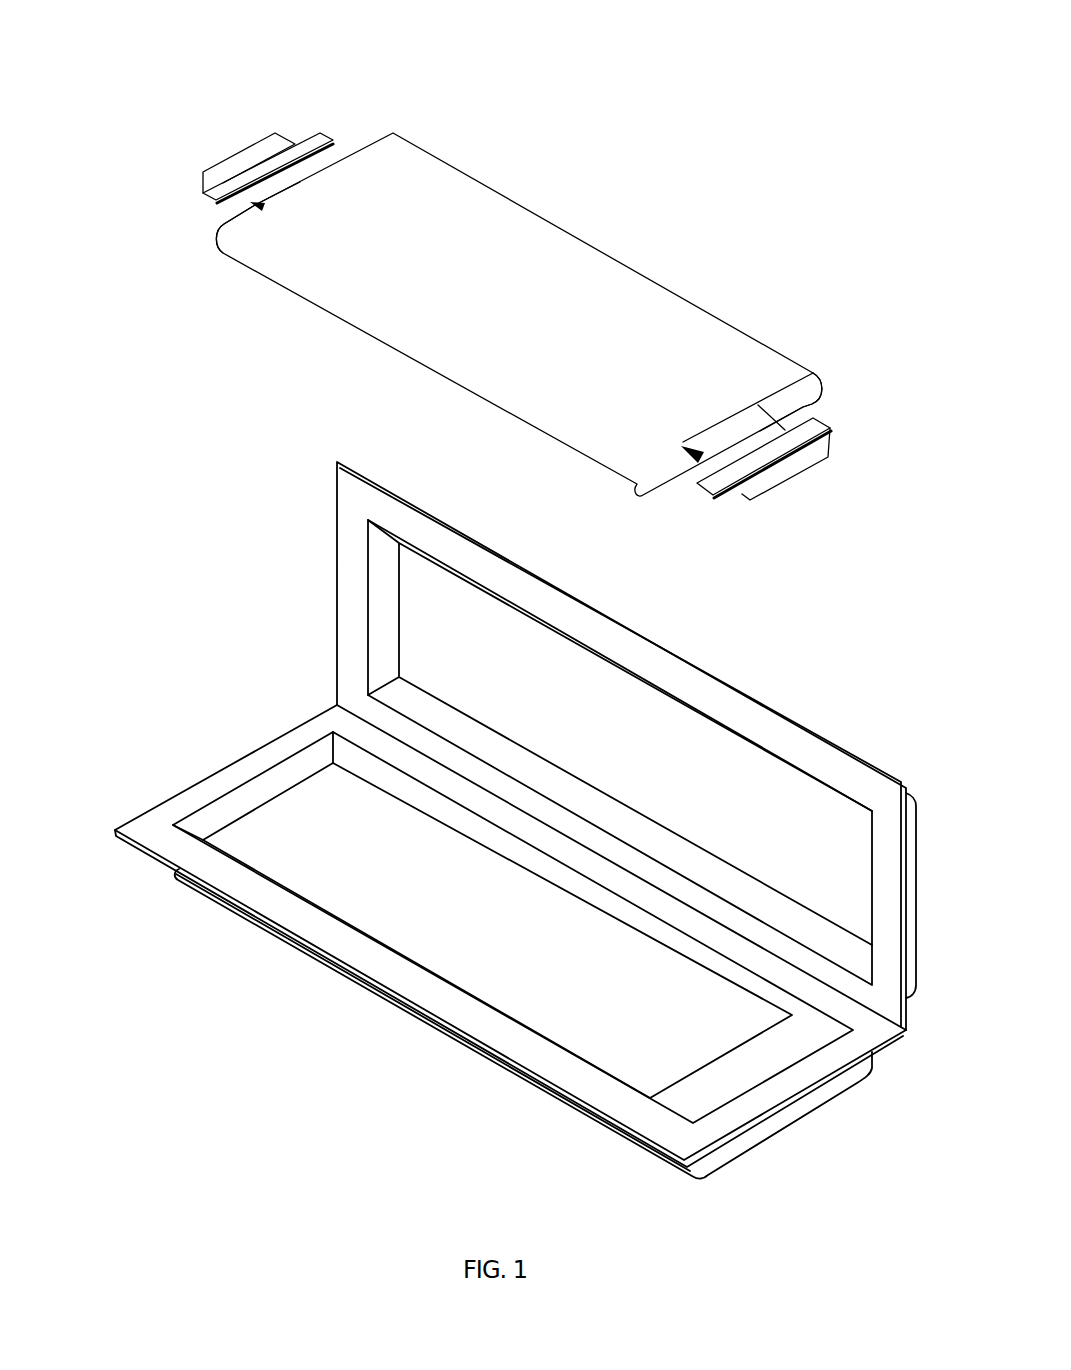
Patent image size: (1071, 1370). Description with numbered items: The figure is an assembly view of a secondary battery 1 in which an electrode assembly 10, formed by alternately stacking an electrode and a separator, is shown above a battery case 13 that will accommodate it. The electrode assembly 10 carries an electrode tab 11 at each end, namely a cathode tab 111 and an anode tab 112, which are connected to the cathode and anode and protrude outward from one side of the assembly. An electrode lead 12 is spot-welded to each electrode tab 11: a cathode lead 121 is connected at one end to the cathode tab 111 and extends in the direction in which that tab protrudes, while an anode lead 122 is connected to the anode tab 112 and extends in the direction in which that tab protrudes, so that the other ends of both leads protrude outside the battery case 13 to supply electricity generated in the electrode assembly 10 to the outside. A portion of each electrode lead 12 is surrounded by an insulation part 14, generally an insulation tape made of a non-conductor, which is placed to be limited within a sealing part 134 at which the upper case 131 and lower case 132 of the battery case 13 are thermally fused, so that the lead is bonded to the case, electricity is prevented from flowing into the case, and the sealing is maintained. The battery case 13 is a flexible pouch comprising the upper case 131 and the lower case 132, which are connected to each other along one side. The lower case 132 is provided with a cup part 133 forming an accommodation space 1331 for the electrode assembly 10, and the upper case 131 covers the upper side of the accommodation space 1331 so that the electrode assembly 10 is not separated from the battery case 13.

The secondary battery 1 is at (146, 90).
The electrode assembly 10 is at (743, 174).
The electrode tab 11 is at (673, 160).
The cathode tab 111 is at (733, 428).
The anode tab 112 is at (300, 182).
The electrode lead 12 is at (447, 458).
The cathode lead 121 is at (767, 476).
The anode lead 122 is at (222, 178).
The battery case 13 is at (102, 635).
The upper case 131 is at (378, 602).
The lower case 132 is at (158, 817).
The cup part 133 is at (782, 1125).
The accommodation space 1331 is at (648, 1068).
The sealing part 134 is at (502, 1033).
The insulation part 14 is at (310, 145).